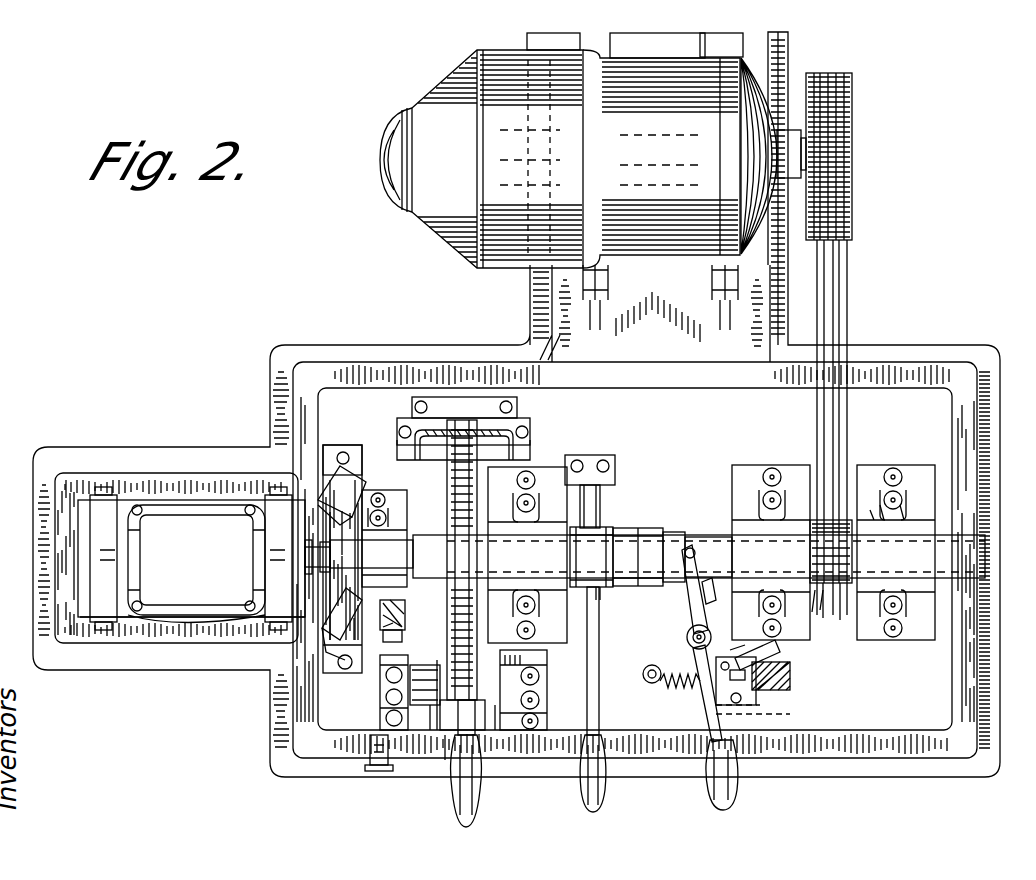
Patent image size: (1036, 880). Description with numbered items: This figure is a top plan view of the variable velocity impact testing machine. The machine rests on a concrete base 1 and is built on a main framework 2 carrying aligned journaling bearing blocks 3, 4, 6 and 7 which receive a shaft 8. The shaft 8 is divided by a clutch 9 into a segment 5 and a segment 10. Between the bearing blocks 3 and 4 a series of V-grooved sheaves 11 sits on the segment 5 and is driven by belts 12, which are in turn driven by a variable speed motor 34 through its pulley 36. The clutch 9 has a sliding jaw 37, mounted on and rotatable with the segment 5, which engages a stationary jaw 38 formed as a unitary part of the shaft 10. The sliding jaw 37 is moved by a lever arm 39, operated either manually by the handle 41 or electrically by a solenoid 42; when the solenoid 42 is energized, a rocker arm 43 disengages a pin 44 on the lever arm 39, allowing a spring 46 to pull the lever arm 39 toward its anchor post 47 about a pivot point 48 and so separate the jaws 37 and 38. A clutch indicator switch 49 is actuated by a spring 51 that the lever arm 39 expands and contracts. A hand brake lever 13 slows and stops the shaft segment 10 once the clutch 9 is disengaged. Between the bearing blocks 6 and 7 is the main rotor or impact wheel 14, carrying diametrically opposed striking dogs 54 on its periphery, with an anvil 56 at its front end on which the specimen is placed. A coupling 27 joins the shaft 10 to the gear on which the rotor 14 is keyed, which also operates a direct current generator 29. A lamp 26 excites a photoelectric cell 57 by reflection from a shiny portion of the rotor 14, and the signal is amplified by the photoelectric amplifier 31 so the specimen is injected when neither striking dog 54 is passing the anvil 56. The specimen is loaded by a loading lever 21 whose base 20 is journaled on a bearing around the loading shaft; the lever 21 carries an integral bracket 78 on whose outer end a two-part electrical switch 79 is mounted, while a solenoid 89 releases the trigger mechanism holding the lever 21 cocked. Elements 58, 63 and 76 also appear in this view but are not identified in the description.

The concrete base 1 is at (290, 347).
The main framework 2 is at (357, 366).
The bearing block 3 is at (932, 512).
The bearing block 4 is at (745, 500).
The shaft segment 5 is at (935, 560).
The bearing block 6 is at (548, 640).
The bearing block 7 is at (400, 497).
The shaft 8 is at (622, 560).
The clutch 9 is at (627, 575).
The shaft segment 10 is at (330, 605).
The sheaves 11 is at (814, 593).
The V-belts 12 is at (820, 298).
The hand brake lever 13 is at (604, 800).
The main rotor 14 is at (472, 512).
The lever base 20 is at (498, 690).
The loading lever 21 is at (478, 800).
The lamp 26 is at (322, 650).
The coupling 27 is at (290, 550).
The direct current generator 29 is at (180, 605).
The photoelectric amplifier 31 is at (82, 530).
The variable speed motor 34 is at (714, 110).
The pulley 36 is at (855, 112).
The sliding jaw 37 is at (660, 535).
The stationary jaw 38 is at (632, 545).
The lever arm 39 is at (685, 604).
The handle 41 is at (738, 796).
The solenoid 42 is at (792, 690).
The rocker arm 43 is at (712, 692).
The pin 44 is at (753, 715).
The spring 46 is at (682, 674).
The anchor post 47 is at (650, 680).
The pivot point 48 is at (688, 640).
The clutch indicator switch 49 is at (790, 660).
The spring 51 is at (705, 630).
The striking dogs 54 is at (470, 420).
The anvil 56 is at (440, 740).
The photoelectric cell 57 is at (330, 500).
The clutch sleeve 58 is at (618, 538).
The shifter fork 63 is at (604, 580).
The channel bracket 76 is at (395, 452).
The bracket 78 is at (408, 748).
The two-part electrical switch 79 is at (375, 755).
The solenoid 89 is at (385, 655).